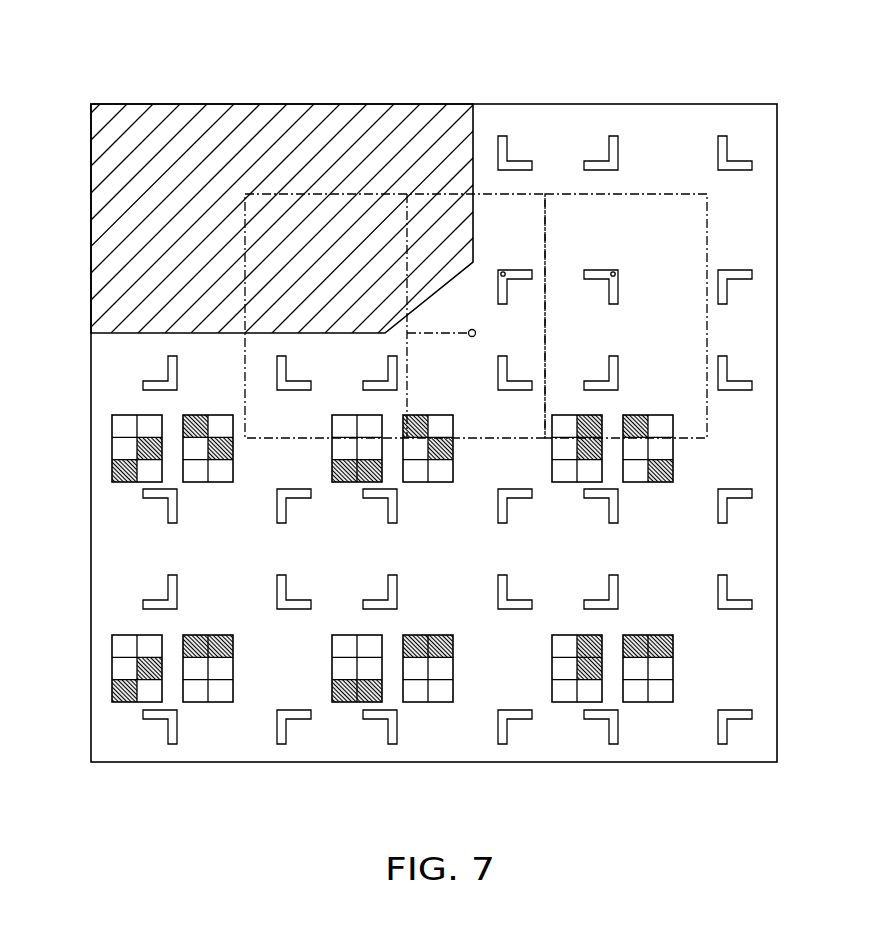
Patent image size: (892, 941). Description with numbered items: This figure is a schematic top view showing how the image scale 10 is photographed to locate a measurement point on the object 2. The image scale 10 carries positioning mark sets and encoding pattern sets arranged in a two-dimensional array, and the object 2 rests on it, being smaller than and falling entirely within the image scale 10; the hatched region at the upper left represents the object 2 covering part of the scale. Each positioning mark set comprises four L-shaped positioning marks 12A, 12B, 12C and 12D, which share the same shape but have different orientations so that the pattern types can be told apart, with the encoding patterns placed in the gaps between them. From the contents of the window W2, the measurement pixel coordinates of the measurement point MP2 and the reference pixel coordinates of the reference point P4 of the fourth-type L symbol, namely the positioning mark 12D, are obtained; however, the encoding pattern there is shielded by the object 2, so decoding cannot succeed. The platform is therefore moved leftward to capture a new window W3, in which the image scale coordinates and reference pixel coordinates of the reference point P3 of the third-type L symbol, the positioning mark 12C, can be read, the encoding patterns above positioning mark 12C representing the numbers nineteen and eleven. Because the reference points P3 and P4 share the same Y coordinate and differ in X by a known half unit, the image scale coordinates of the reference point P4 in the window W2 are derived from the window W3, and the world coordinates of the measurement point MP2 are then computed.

The object 2 is at (228, 135).
The image scale 10 is at (117, 524).
The positioning mark 12A is at (619, 368).
The positioning mark 12B is at (497, 376).
The positioning mark 12C is at (619, 285).
The positioning mark 12D is at (517, 281).
The window W2 is at (245, 355).
The window W3 is at (708, 338).
The measurement point MP2 is at (470, 329).
The reference point P3 is at (613, 271).
The reference point P4 is at (503, 271).